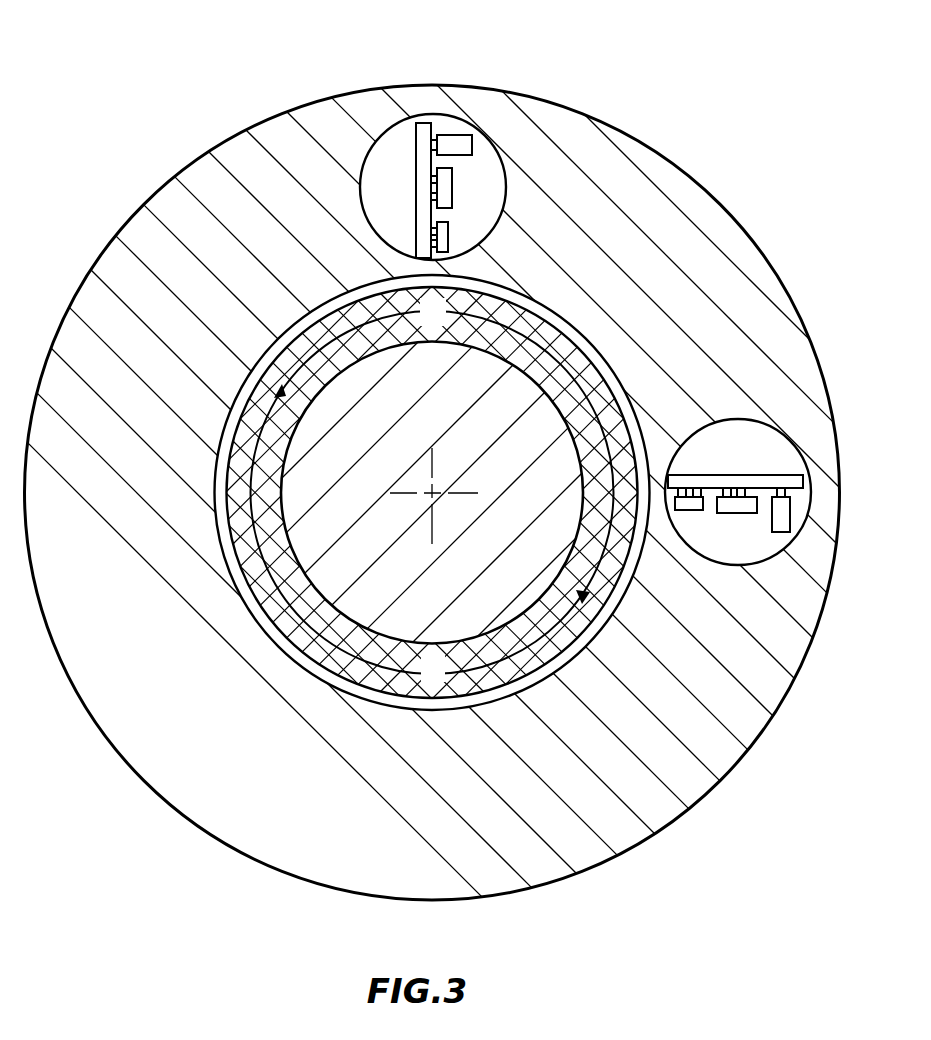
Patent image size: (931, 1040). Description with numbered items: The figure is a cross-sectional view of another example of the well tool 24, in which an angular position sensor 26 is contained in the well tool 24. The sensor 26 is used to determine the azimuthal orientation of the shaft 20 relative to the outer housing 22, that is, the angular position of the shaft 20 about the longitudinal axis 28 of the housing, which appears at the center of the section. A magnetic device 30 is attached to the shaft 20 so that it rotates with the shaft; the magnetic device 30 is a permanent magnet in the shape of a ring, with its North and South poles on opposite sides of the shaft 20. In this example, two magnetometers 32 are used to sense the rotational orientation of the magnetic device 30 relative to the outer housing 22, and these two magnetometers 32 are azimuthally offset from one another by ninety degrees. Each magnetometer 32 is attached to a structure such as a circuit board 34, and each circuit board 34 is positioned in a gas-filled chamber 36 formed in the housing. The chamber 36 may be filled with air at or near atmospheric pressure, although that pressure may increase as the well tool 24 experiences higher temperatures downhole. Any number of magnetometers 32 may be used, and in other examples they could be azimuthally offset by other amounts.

The shaft 20 is at (323, 680).
The outer housing 22 is at (755, 740).
The well tool 24 is at (713, 98).
The angular position sensor 26 is at (688, 277).
The longitudinal axis 28 is at (437, 493).
The magnetic device 30 is at (383, 695).
The magnetometer 32 is at (453, 235).
The circuit board 34 is at (415, 147).
The gas-filled chamber 36 is at (477, 167).